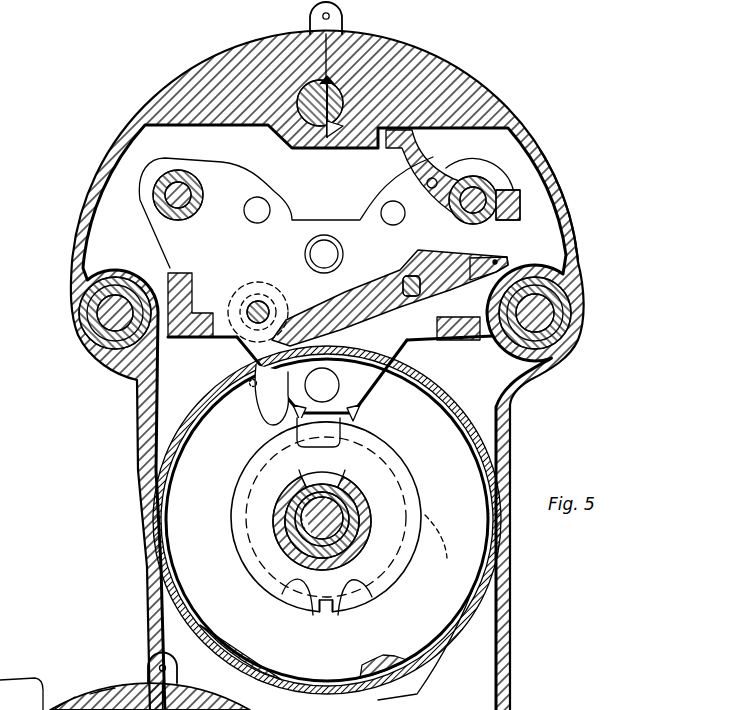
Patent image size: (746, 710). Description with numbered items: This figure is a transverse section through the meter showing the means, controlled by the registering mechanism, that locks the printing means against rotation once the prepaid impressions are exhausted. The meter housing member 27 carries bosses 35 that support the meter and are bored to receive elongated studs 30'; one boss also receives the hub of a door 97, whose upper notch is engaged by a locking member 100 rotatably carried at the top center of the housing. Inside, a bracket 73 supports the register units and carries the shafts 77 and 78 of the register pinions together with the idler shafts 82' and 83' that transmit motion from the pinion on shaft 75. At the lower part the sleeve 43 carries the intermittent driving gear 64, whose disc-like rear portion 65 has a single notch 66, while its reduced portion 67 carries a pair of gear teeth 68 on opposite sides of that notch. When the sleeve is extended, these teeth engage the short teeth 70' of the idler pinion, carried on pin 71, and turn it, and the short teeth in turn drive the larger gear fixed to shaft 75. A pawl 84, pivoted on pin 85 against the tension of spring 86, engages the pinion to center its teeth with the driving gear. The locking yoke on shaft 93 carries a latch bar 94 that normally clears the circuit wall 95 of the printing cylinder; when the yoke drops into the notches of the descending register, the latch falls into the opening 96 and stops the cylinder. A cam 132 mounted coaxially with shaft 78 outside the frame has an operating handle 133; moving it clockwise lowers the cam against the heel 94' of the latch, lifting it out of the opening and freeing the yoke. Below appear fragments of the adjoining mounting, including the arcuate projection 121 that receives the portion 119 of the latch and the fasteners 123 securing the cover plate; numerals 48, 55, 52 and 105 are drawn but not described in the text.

The meter housing member 27 is at (157, 100).
The locking member 100 is at (310, 100).
The door 97 is at (563, 193).
The shaft 77 is at (170, 190).
The bracket 73 is at (228, 200).
The idler shaft 82' is at (261, 187).
The idler shaft 83' is at (389, 193).
The operating handle 133 is at (437, 148).
The shaft 78 is at (480, 187).
The cam 132 is at (513, 187).
The shaft 75 is at (326, 236).
The latch bar 94 is at (338, 294).
The heel 94' is at (552, 251).
The shaft 93 is at (407, 275).
The pin 85 is at (253, 307).
The boss 35 is at (87, 302).
The stud 30' is at (318, 314).
The circuit wall 95 is at (437, 387).
The pawl 84 is at (273, 405).
The spring 86 is at (262, 392).
The pin 71 is at (339, 383).
The short teeth 70' is at (318, 438).
The disc-like rear portion 65 is at (402, 450).
The intermittent driving gear 64 is at (398, 494).
The reduced portion 67 is at (447, 558).
The notch 66 is at (323, 614).
The gear teeth 68 is at (282, 590).
The clip ring 48 is at (283, 482).
The sleeve 43 is at (284, 494).
The hub 55 is at (307, 522).
The shaft 52 is at (280, 537).
The opening 96 is at (362, 670).
The screws or rivets 123 is at (227, 709).
The arcuately formed projection 121 is at (67, 709).
The portion of latch 119 is at (100, 709).
The housing 105 is at (8, 678).